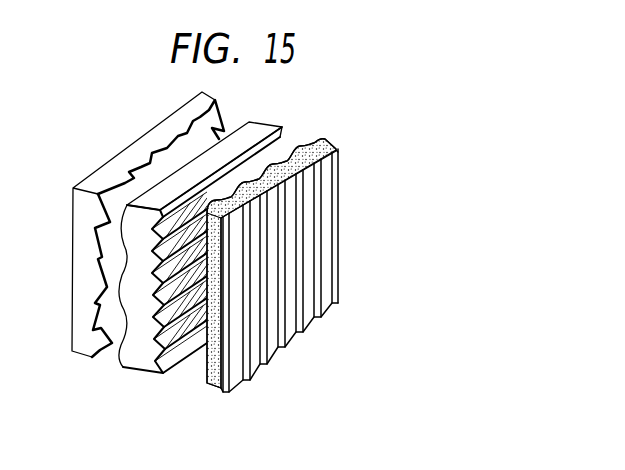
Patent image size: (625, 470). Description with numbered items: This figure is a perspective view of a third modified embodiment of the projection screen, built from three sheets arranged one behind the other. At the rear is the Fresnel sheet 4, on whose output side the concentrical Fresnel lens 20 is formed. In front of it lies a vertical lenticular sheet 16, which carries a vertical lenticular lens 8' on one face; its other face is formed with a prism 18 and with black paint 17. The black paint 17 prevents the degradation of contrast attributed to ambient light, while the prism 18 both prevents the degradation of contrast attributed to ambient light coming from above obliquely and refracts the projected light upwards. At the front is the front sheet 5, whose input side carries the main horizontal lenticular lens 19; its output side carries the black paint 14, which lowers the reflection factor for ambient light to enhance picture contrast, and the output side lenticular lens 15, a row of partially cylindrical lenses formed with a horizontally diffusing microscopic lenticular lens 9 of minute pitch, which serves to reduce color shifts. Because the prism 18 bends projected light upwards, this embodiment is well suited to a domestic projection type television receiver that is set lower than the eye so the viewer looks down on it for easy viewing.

The Fresnel sheet 4 is at (172, 118).
The concentrical Fresnel lens 20 is at (110, 285).
The vertical lenticular lens 8' is at (103, 302).
The vertical lenticular sheet 16 is at (265, 127).
The black paint 17 is at (178, 347).
The prism 18 is at (156, 376).
The main horizontal lenticular lens 19 is at (300, 137).
The front sheet 5 is at (312, 147).
The black paint 14 is at (323, 153).
The output side lenticular lens 15 is at (330, 198).
The horizontally diffusing microscopic lenticular lens 9 is at (0, 462).